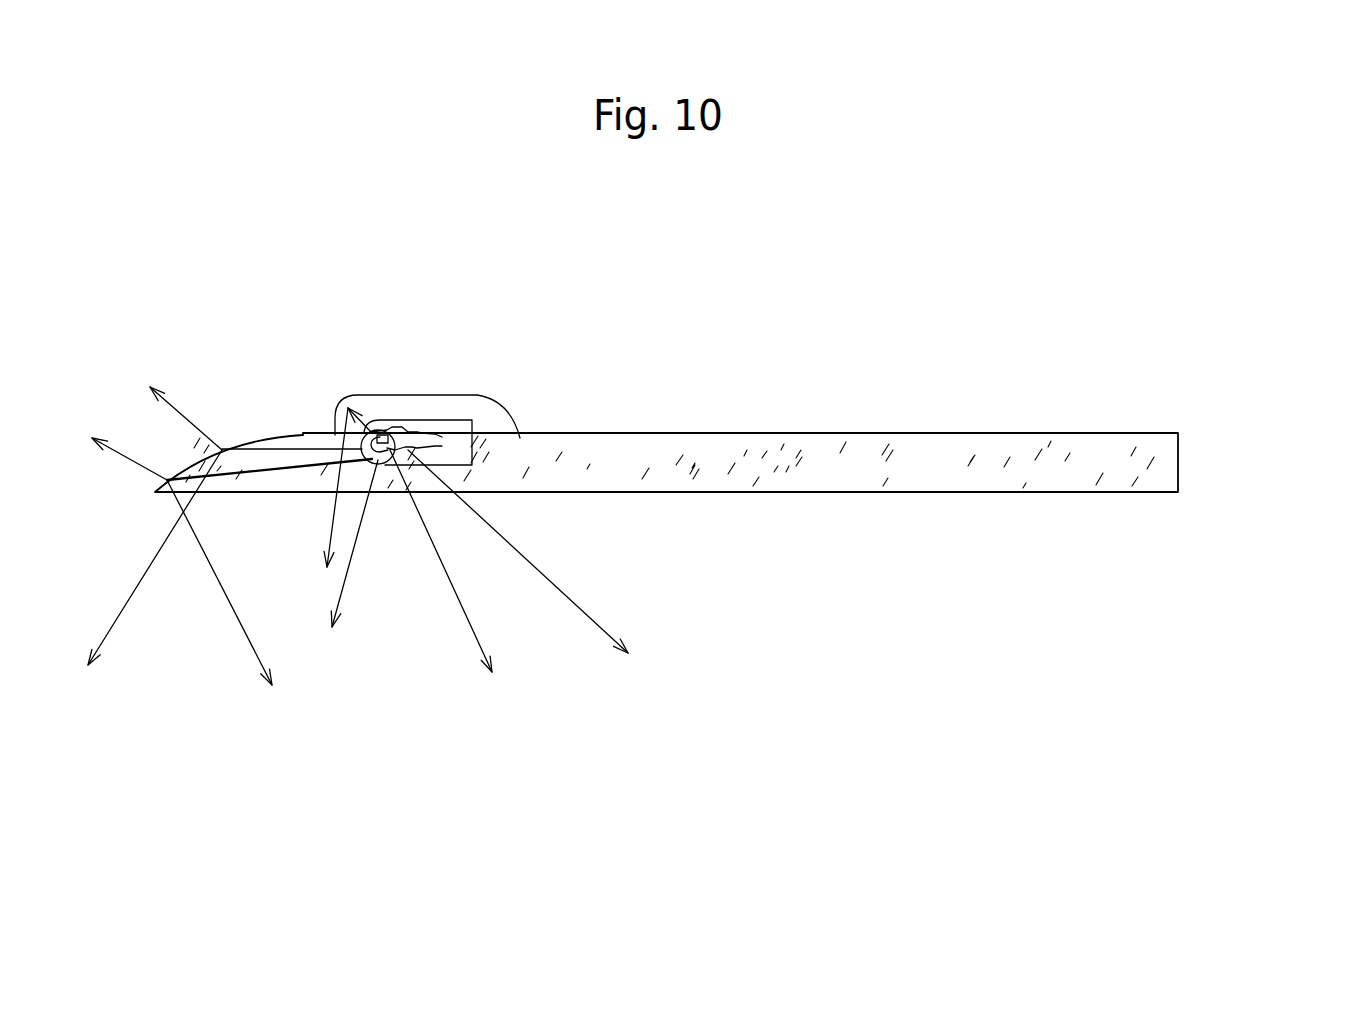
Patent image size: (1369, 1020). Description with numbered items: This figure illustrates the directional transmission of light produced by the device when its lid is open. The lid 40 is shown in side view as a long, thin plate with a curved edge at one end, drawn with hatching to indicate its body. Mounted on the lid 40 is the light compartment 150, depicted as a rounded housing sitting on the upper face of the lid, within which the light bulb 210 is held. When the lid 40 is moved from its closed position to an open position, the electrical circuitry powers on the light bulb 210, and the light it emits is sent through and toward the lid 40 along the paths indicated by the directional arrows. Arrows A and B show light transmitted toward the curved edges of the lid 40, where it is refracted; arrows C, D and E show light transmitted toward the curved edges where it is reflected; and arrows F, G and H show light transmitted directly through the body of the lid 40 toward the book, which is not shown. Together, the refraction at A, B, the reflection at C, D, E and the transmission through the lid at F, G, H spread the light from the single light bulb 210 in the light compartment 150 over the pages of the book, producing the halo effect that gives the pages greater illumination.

The lid 40 is at (1045, 433).
The light compartment 150 is at (417, 395).
The light bulb 210 is at (450, 442).
The directional arrow A is at (167, 402).
The directional arrow B is at (110, 446).
The directional arrow C is at (145, 581).
The directional arrow D is at (237, 612).
The directional arrow E is at (331, 516).
The directional arrow F is at (350, 569).
The directional arrow G is at (452, 589).
The directional arrow H is at (535, 582).